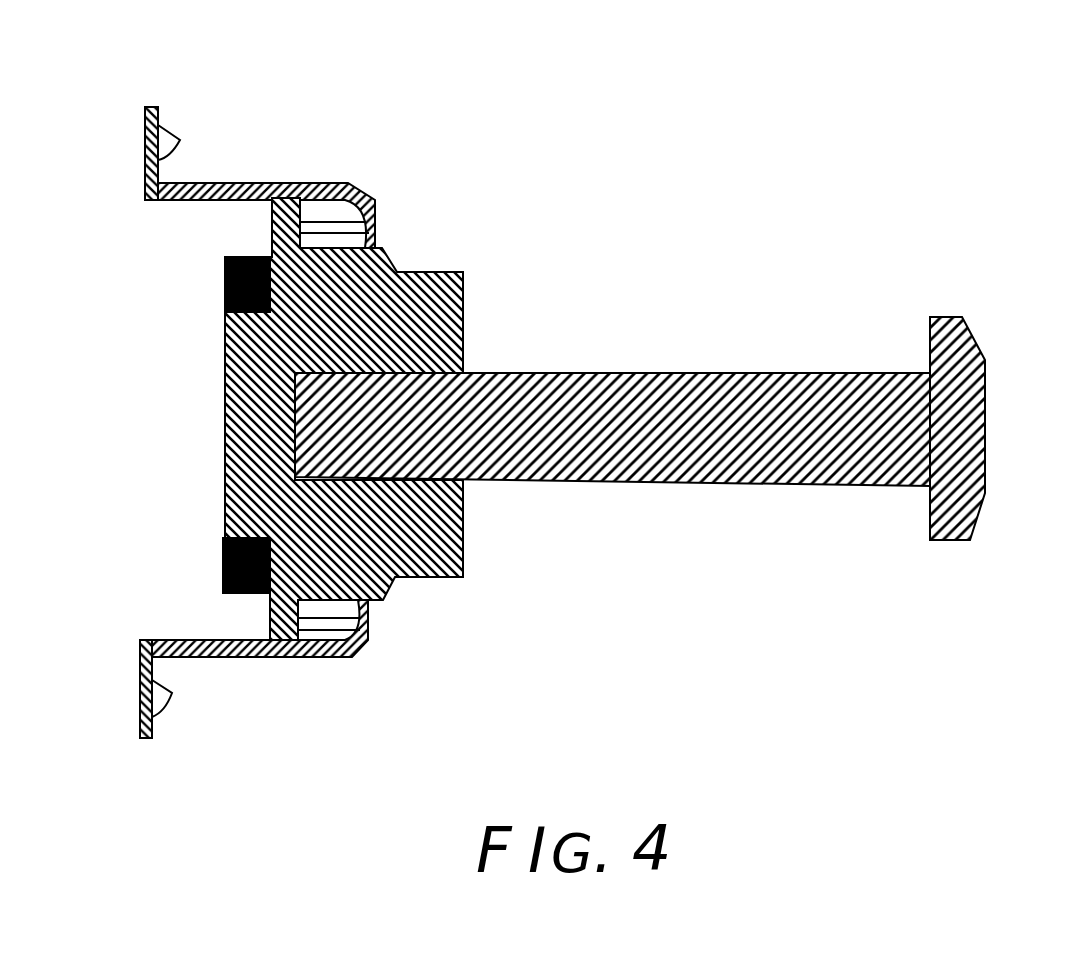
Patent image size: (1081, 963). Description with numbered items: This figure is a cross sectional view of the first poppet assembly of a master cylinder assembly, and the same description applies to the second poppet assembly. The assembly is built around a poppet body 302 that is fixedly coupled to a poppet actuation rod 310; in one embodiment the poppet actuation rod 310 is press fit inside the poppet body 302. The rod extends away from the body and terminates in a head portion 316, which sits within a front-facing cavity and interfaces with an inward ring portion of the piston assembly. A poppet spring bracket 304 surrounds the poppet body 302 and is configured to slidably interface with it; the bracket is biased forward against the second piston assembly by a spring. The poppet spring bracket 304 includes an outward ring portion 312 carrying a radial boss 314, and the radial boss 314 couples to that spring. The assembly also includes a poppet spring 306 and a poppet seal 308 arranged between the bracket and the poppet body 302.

The poppet body 302 is at (463, 322).
The poppet spring bracket 304 is at (239, 160).
The poppet spring 306 is at (332, 223).
The poppet seal 308 is at (226, 277).
The poppet actuation rod 310 is at (760, 373).
The outward ring portion 312 is at (147, 107).
The radial boss 314 is at (168, 130).
The head portion 316 is at (963, 320).